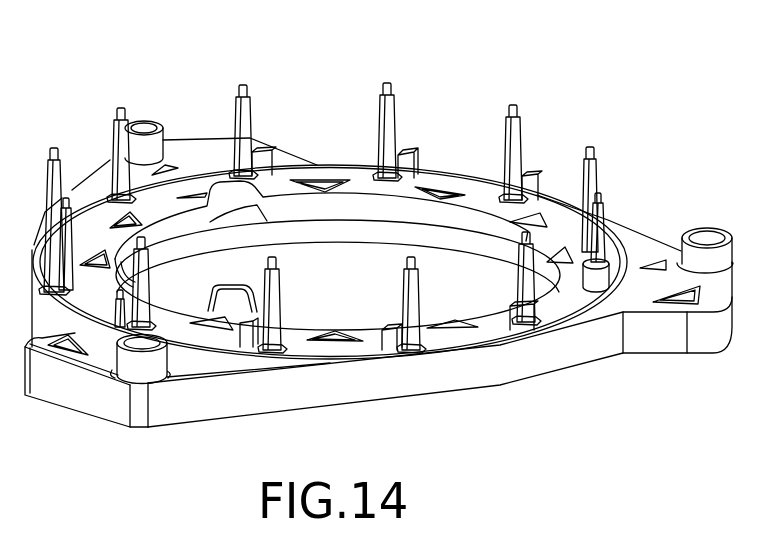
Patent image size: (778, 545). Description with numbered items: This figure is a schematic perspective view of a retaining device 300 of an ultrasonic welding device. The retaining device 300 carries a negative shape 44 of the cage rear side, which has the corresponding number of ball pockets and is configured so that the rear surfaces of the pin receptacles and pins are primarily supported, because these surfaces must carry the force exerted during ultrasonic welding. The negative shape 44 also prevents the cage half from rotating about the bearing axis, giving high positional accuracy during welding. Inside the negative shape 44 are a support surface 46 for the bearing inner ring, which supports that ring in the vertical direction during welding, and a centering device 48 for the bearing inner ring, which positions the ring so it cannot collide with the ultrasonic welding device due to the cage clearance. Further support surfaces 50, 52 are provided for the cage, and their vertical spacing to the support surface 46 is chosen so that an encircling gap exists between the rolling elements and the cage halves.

The retaining device 300 is at (616, 103).
The negative shape 44 is at (385, 124).
The support surface 46 is at (463, 336).
The centering device 48 is at (238, 198).
The further support surface 50 is at (390, 335).
The further support surface 52 is at (415, 275).